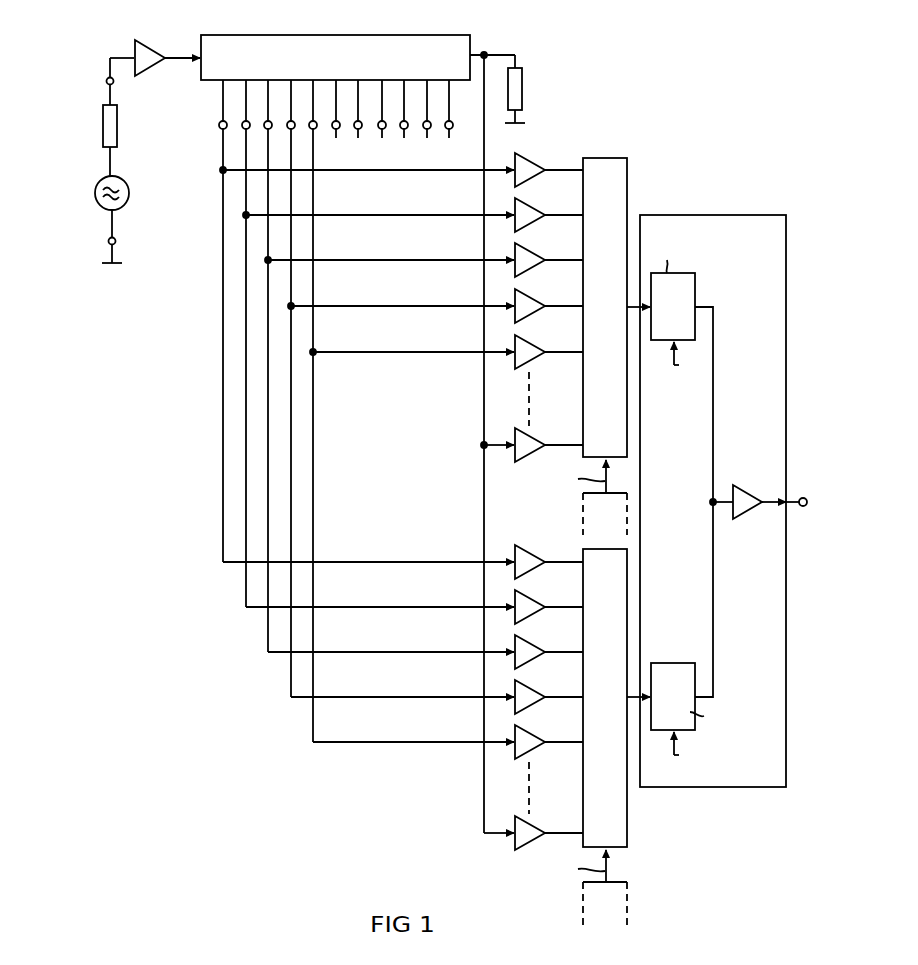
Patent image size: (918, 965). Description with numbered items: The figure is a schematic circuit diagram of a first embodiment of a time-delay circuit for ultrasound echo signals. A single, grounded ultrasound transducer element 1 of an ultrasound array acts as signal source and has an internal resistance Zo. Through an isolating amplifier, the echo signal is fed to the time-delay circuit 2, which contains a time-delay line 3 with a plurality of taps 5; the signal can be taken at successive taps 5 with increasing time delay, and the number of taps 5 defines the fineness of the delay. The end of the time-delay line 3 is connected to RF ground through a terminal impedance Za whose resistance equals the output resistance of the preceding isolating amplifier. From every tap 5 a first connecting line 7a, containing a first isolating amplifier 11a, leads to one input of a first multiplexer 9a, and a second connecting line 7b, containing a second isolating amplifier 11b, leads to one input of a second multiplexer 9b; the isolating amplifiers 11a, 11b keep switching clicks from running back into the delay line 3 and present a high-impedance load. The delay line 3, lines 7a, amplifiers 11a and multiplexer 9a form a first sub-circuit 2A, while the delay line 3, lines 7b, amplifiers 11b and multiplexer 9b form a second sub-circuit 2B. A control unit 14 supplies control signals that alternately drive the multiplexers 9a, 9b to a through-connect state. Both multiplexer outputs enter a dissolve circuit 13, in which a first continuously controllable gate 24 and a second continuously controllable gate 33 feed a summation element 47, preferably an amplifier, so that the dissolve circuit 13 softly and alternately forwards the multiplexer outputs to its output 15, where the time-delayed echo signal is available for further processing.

The ultrasound transducer element 1 is at (146, 275).
The time-delay circuit 2 is at (197, 263).
The first sub-circuit 2A is at (415, 330).
The second sub-circuit 2B is at (426, 588).
The time-delay line 3 is at (395, 35).
The taps 5 is at (265, 128).
The first connecting line 7a is at (378, 172).
The second connecting line 7b is at (372, 564).
The first multiplexer 9a is at (596, 157).
The second multiplexer 9b is at (627, 809).
The first isolating amplifier 11a is at (535, 139).
The second isolating amplifier 11b is at (528, 546).
The dissolve circuit 13 is at (696, 215).
The control unit 14 is at (452, 484).
The output 15 is at (803, 499).
The first continuously controllable gate 24 is at (696, 283).
The second continuously controllable gate 33 is at (672, 663).
The summation element 47 is at (738, 485).
The internal resistance Zo is at (117, 126).
The terminal impedance Za is at (522, 91).